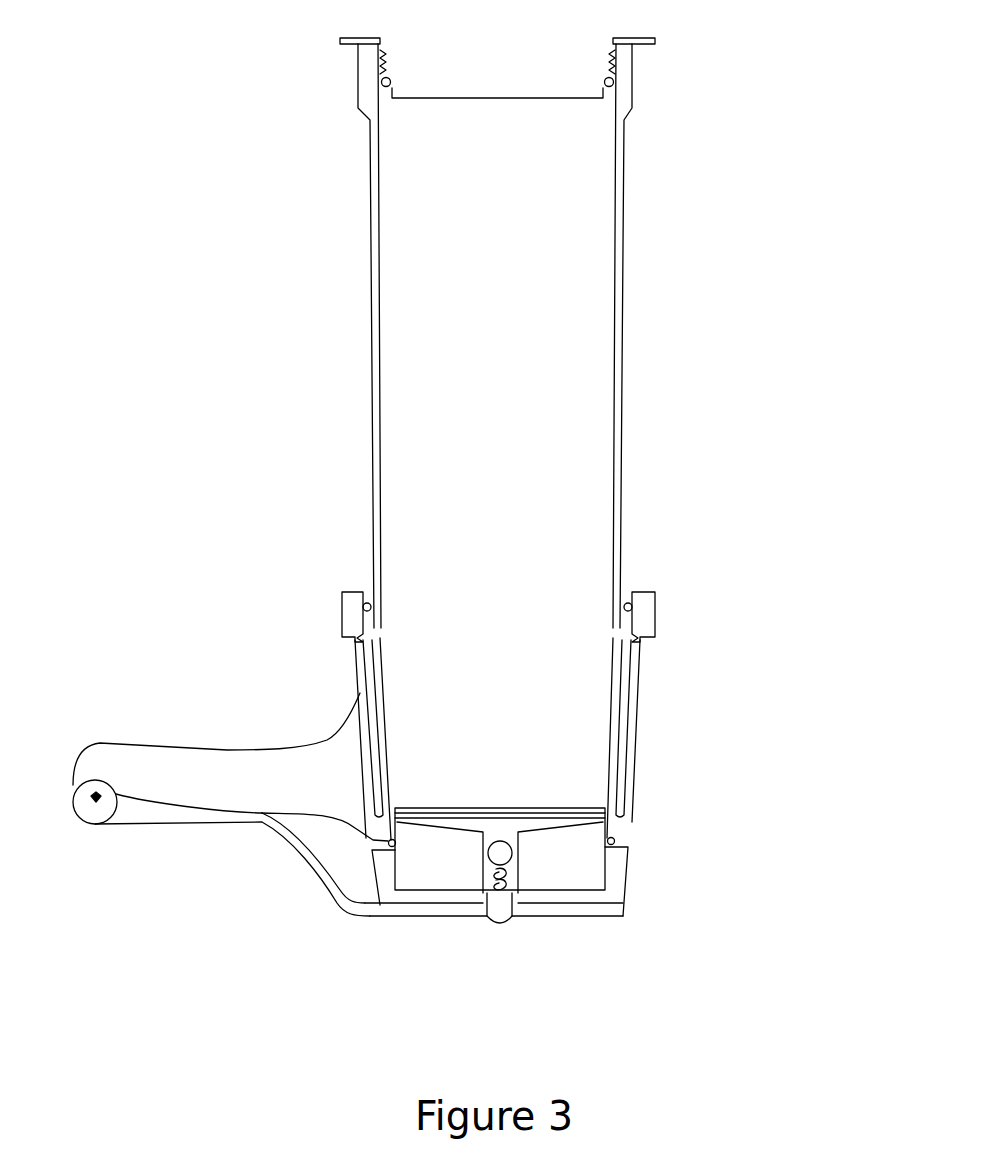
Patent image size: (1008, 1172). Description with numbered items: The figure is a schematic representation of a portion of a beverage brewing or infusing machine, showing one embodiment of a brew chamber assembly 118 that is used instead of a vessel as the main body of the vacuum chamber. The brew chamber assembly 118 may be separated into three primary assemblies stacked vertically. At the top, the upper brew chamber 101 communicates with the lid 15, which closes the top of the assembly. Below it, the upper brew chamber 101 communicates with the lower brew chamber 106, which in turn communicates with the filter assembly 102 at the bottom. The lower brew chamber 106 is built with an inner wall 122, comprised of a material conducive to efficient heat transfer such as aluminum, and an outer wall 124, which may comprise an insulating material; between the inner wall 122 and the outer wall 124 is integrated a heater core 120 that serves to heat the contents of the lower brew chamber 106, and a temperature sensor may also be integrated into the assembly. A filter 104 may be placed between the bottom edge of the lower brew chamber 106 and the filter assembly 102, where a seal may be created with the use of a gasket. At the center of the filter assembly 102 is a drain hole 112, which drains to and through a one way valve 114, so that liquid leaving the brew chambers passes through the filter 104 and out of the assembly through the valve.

The lid 15 is at (470, 62).
The upper brew chamber 101 is at (372, 224).
The brew chamber assembly 118 is at (715, 182).
The outer wall 124 is at (350, 615).
The inner wall 122 is at (372, 678).
The heater core 120 is at (363, 684).
The lower brew chamber 106 is at (638, 705).
The filter 104 is at (670, 829).
The filter assembly 102 is at (420, 867).
The drain hole 112 is at (497, 926).
The one way valve 114 is at (500, 860).